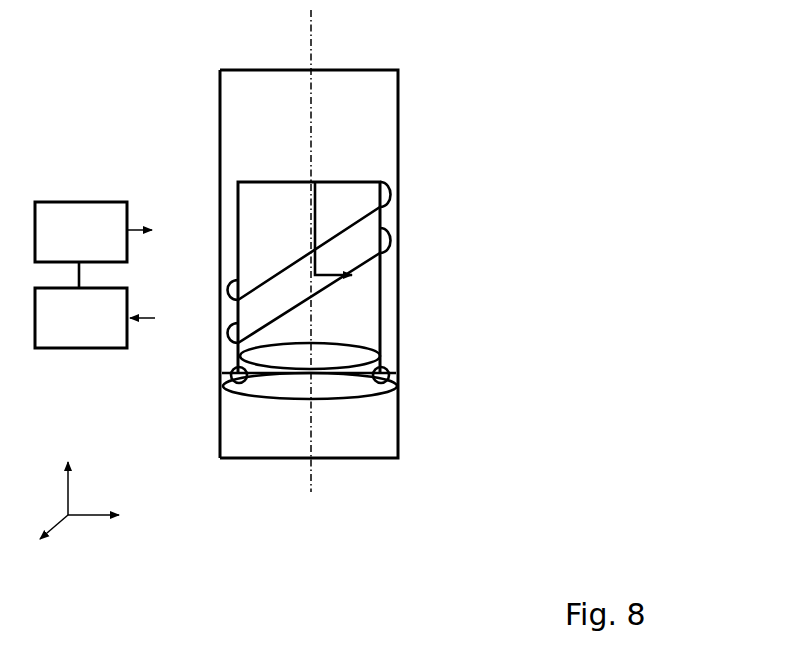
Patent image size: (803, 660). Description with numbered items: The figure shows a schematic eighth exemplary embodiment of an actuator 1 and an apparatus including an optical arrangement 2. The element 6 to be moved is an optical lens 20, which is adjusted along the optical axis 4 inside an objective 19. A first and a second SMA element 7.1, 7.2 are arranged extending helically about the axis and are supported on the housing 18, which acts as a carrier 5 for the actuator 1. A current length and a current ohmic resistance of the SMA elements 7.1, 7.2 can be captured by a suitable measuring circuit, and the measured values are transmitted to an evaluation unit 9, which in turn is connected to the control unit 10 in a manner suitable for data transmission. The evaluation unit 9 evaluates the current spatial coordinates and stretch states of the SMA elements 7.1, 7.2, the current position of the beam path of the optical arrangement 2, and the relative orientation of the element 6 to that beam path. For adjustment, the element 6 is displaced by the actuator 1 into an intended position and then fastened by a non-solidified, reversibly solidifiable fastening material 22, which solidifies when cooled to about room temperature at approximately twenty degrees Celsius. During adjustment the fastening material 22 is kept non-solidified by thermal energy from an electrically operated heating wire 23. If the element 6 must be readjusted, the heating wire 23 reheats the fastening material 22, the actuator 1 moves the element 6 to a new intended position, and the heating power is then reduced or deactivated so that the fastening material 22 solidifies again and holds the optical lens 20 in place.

The actuator 1 is at (156, 129).
The optical arrangement 2 is at (102, 89).
The optical axis 4 is at (314, 49).
The carrier 5 is at (309, 264).
The housing 18 is at (401, 147).
The element to be moved 6 is at (263, 181).
The objective 19 is at (221, 194).
The first SMA element 7.1 is at (385, 212).
The second SMA element 7.2 is at (362, 273).
The evaluation unit 9 is at (95, 318).
The control unit 10 is at (93, 245).
The optical lens 20 is at (352, 347).
The fastening material 22 is at (231, 376).
The heating wire 23 is at (262, 398).